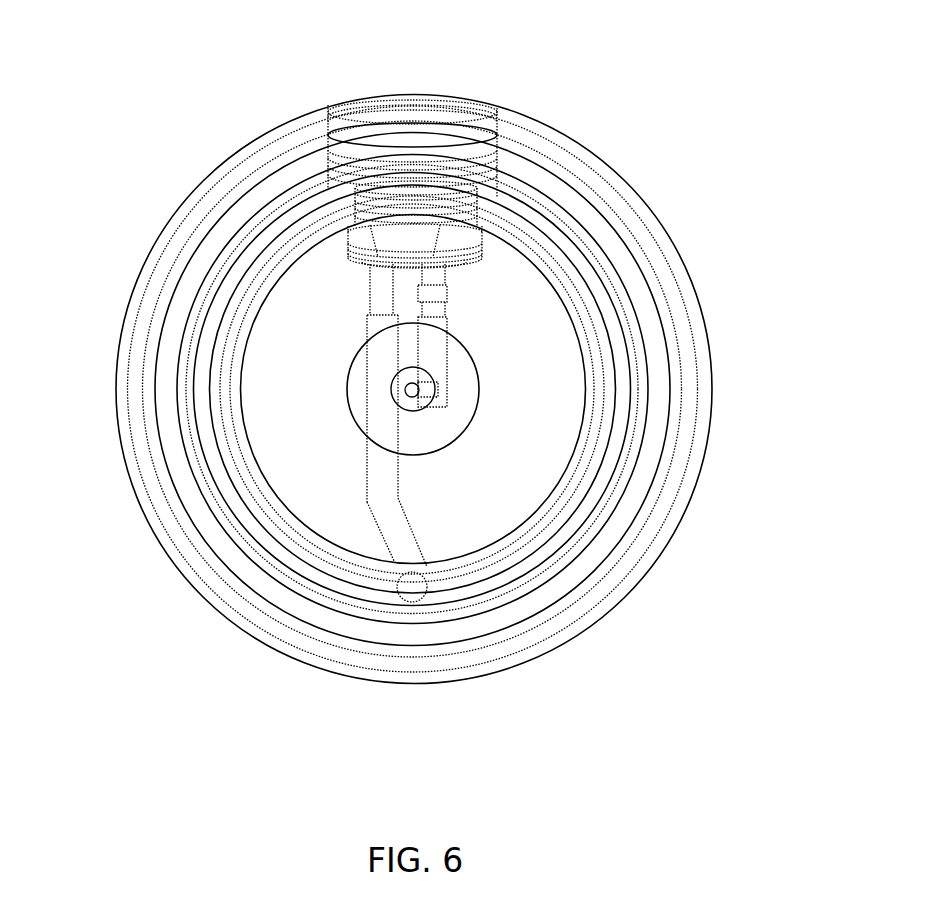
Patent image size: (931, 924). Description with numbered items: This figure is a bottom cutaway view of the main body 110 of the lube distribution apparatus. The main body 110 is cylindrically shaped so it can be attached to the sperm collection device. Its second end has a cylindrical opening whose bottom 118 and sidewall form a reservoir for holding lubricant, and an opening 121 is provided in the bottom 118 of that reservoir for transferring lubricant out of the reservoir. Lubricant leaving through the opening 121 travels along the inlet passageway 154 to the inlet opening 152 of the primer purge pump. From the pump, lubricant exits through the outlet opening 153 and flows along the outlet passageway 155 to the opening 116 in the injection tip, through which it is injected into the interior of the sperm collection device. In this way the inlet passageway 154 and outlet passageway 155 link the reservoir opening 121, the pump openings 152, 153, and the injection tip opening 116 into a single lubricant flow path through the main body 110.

The main body 110 is at (168, 78).
The opening 116 is at (415, 390).
The bottom 118 is at (498, 497).
The opening 121 is at (413, 603).
The inlet opening 152 is at (313, 220).
The outlet opening 153 is at (473, 203).
The inlet passageway 154 is at (375, 463).
The outlet passageway 155 is at (433, 343).